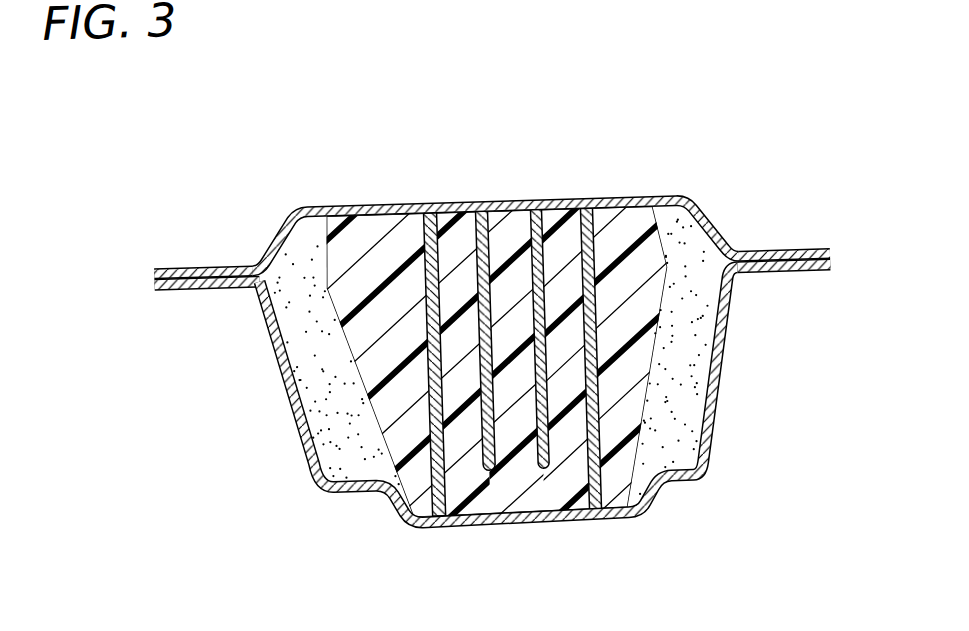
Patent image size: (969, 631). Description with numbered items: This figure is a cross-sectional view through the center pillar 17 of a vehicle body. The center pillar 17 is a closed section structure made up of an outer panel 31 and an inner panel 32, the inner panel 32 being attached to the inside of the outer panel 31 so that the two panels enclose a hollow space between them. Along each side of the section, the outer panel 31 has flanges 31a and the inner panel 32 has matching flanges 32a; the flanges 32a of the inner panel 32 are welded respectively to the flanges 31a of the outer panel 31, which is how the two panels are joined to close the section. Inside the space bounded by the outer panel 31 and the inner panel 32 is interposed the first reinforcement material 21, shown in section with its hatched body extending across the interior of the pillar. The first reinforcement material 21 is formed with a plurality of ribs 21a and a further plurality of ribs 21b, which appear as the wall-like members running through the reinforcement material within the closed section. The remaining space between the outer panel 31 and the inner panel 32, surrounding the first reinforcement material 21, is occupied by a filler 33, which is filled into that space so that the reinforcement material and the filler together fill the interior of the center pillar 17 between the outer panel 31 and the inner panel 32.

The center pillar 17 is at (474, 312).
The first reinforcement material 21 is at (421, 359).
The ribs 21a is at (427, 222).
The ribs 21b is at (480, 460).
The outer panel 31 is at (469, 398).
The flanges of the outer panel 31a is at (199, 281).
The inner panel 32 is at (474, 188).
The flanges of the inner panel 32a is at (201, 261).
The filler 33 is at (350, 456).